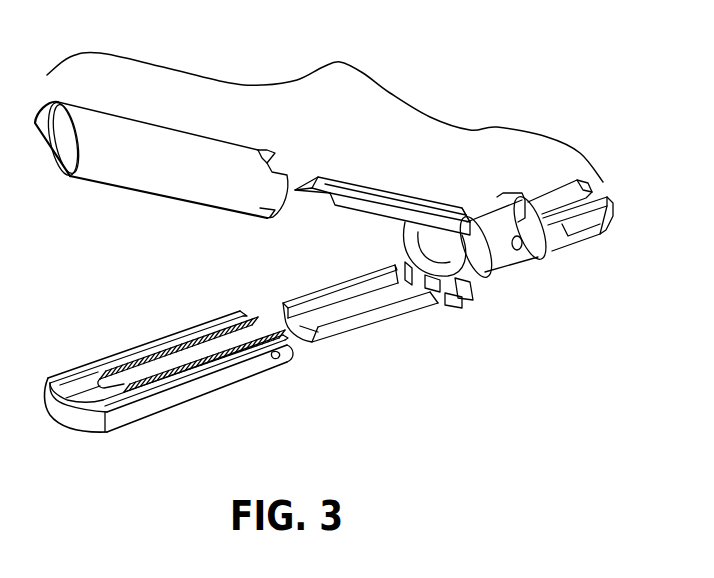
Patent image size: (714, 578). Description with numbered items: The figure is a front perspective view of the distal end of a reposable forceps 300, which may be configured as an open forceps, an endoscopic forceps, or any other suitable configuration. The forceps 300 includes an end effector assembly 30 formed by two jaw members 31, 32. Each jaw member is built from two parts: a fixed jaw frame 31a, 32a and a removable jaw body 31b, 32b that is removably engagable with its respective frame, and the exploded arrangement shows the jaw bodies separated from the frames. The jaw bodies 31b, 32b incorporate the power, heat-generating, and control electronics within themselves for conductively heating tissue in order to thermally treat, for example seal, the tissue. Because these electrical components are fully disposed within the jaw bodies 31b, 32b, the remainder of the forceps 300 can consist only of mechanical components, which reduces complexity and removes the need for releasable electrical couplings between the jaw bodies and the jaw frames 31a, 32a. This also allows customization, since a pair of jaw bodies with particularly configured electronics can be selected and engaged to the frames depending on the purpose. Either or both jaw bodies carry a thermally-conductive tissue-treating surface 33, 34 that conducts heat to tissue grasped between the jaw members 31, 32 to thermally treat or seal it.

The reposable forceps 300 is at (487, 69).
The end effector assembly 30 is at (325, 107).
The jaw member 31 is at (360, 162).
The jaw frame 31a is at (395, 200).
The jaw body 31b is at (167, 140).
The thermally-conductive tissue-treating surface 33 is at (165, 200).
The jaw member 32 is at (352, 352).
The jaw frame 32a is at (370, 328).
The jaw body 32b is at (202, 397).
The thermally-conductive tissue-treating surface 34 is at (160, 343).